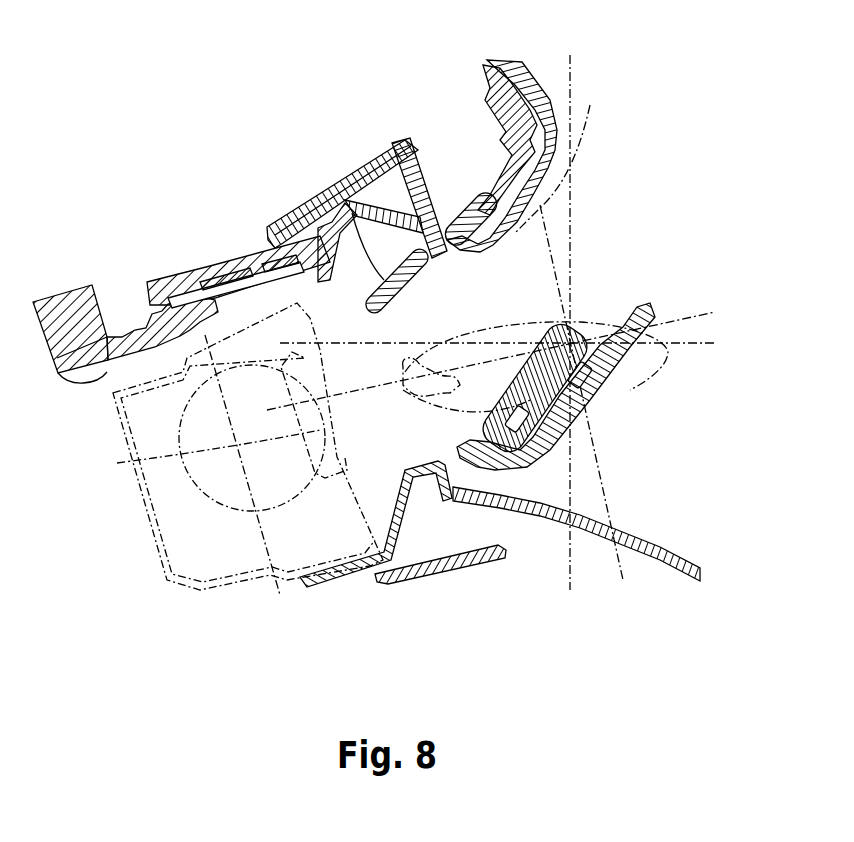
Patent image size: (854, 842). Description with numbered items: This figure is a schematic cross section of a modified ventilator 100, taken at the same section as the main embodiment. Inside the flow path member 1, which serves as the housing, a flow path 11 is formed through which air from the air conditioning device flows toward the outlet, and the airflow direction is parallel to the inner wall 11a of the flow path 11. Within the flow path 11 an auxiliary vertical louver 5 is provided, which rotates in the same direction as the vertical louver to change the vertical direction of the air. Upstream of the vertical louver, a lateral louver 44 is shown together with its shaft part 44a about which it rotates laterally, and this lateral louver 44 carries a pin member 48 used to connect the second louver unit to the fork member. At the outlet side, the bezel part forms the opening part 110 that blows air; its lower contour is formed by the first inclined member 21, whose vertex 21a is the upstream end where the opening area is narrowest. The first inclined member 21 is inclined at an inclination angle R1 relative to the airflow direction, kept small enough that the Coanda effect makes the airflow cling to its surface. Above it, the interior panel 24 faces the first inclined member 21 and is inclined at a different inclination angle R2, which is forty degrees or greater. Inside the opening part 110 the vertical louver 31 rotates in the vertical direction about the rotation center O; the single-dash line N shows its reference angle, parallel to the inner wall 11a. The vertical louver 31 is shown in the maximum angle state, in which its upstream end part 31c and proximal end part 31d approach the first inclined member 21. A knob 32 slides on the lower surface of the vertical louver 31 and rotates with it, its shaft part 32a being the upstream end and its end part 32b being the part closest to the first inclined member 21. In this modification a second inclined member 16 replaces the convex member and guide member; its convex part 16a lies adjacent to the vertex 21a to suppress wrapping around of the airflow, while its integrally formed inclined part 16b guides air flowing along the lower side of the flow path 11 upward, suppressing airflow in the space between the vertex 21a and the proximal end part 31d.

The ventilator 100 is at (112, 70).
The flow path member 1 is at (115, 255).
The flow path 11 is at (124, 375).
The inner wall 11a is at (72, 357).
The lateral louver 44 is at (264, 548).
The shaft part 44a is at (221, 258).
The pin member 48 is at (135, 463).
The auxiliary vertical louver 5 is at (346, 190).
The interior panel 24 is at (552, 176).
The inclination angle R2 is at (535, 205).
The opening part 110 is at (621, 253).
The vertical louver 31 is at (562, 315).
The rotation center O is at (575, 333).
The knob 32 is at (628, 310).
The line N is at (660, 328).
The upstream end part 31c is at (570, 408).
The proximal end part 31d is at (580, 432).
The shaft part 32a is at (560, 455).
The end part 32b is at (562, 472).
The convex part 16a is at (520, 480).
The inclination angle R1 is at (495, 515).
The vertex 21a is at (505, 560).
The first inclined member 21 is at (612, 540).
The inclined part 16b is at (405, 493).
The second inclined member 16 is at (372, 574).